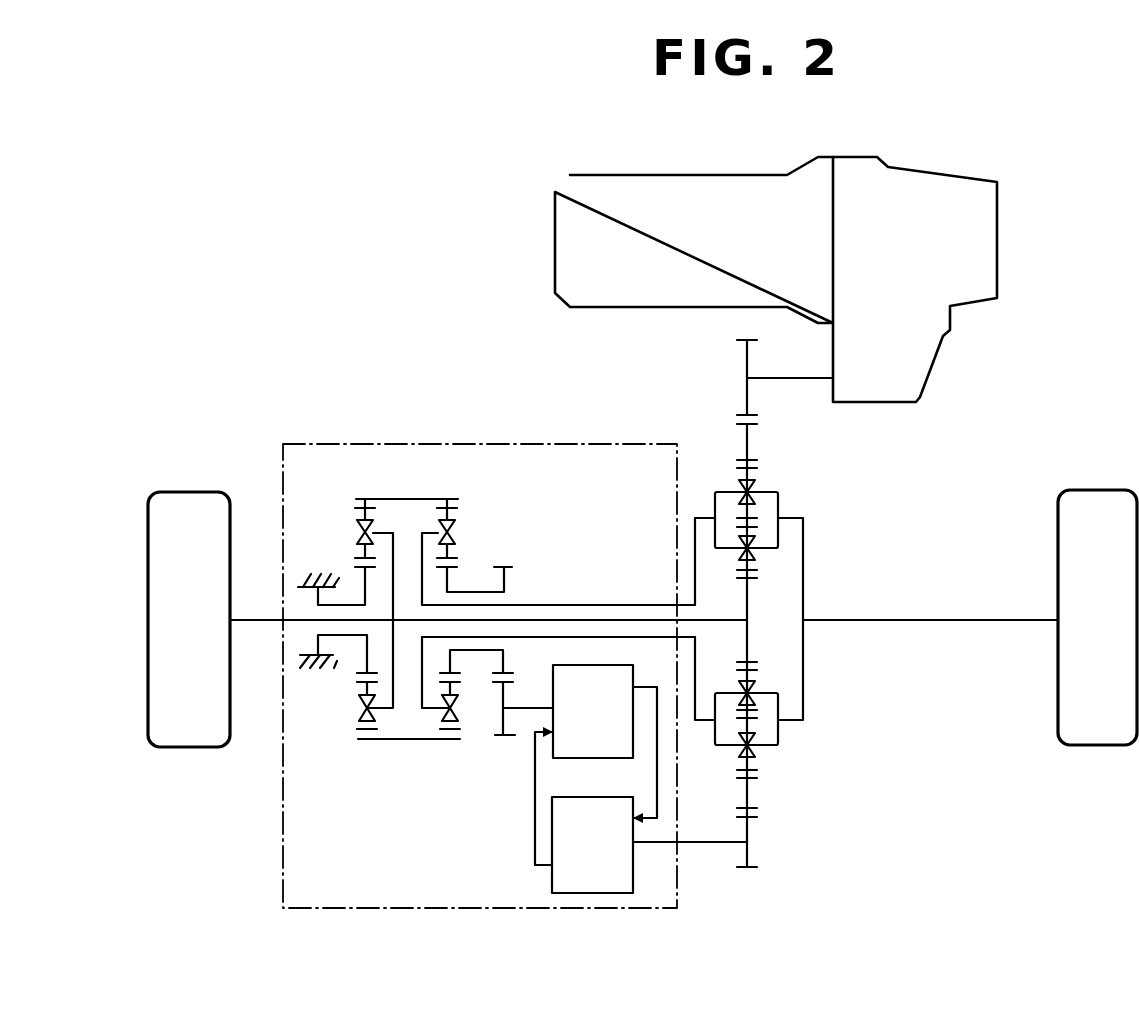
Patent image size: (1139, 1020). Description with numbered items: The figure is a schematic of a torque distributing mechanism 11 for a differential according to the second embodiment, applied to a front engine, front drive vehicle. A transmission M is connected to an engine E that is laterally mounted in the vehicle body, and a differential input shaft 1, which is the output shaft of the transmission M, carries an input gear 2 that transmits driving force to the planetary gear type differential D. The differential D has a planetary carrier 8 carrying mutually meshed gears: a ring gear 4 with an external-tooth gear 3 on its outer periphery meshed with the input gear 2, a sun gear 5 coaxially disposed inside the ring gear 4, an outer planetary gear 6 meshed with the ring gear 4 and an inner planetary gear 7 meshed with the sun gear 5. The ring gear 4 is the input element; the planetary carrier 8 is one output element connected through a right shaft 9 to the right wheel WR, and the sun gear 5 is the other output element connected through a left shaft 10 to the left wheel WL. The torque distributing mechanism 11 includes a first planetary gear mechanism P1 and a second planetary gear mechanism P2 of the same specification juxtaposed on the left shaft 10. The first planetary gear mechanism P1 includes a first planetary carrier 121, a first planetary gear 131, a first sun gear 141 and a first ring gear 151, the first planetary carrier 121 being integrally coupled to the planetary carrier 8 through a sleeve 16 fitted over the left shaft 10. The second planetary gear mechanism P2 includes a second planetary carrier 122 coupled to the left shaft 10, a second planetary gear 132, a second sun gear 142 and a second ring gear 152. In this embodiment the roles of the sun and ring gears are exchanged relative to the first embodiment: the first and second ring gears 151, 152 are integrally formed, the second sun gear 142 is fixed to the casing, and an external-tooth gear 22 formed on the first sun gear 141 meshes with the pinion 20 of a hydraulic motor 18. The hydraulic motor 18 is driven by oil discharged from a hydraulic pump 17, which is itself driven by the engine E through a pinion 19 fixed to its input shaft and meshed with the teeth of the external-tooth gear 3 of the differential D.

The differential input shaft 1 is at (787, 377).
The input gear 2 is at (755, 413).
The external-tooth gear 3 is at (740, 427).
The ring gear 4 is at (755, 462).
The sun gear 5 is at (748, 580).
The outer planetary gear 6 is at (740, 467).
The inner planetary gear 7 is at (757, 568).
The planetary carrier 8 is at (803, 533).
The right shaft 9 is at (948, 620).
The left shaft 10 is at (253, 620).
The torque distributing mechanism 11 is at (488, 440).
The first planetary carrier 121 is at (418, 545).
The second planetary carrier 122 is at (395, 697).
The first planetary gear 131 is at (452, 558).
The second planetary gear 132 is at (358, 557).
The first sun gear 141 is at (455, 566).
The second sun gear 142 is at (355, 567).
The first ring gear 151 is at (450, 496).
The second ring gear 152 is at (367, 496).
The sleeve 16 is at (602, 603).
The hydraulic pump 17 is at (598, 859).
The hydraulic motor 18 is at (598, 727).
The pinion 19 is at (757, 817).
The pinion 20 is at (508, 685).
The external-tooth gear 22 is at (510, 672).
The engine E is at (652, 293).
The transmission M is at (977, 294).
The differential D is at (826, 588).
The first planetary gear mechanism P1 is at (491, 511).
The second planetary gear mechanism P2 is at (331, 517).
The left wheel WL is at (187, 502).
The right wheel WR is at (1097, 500).